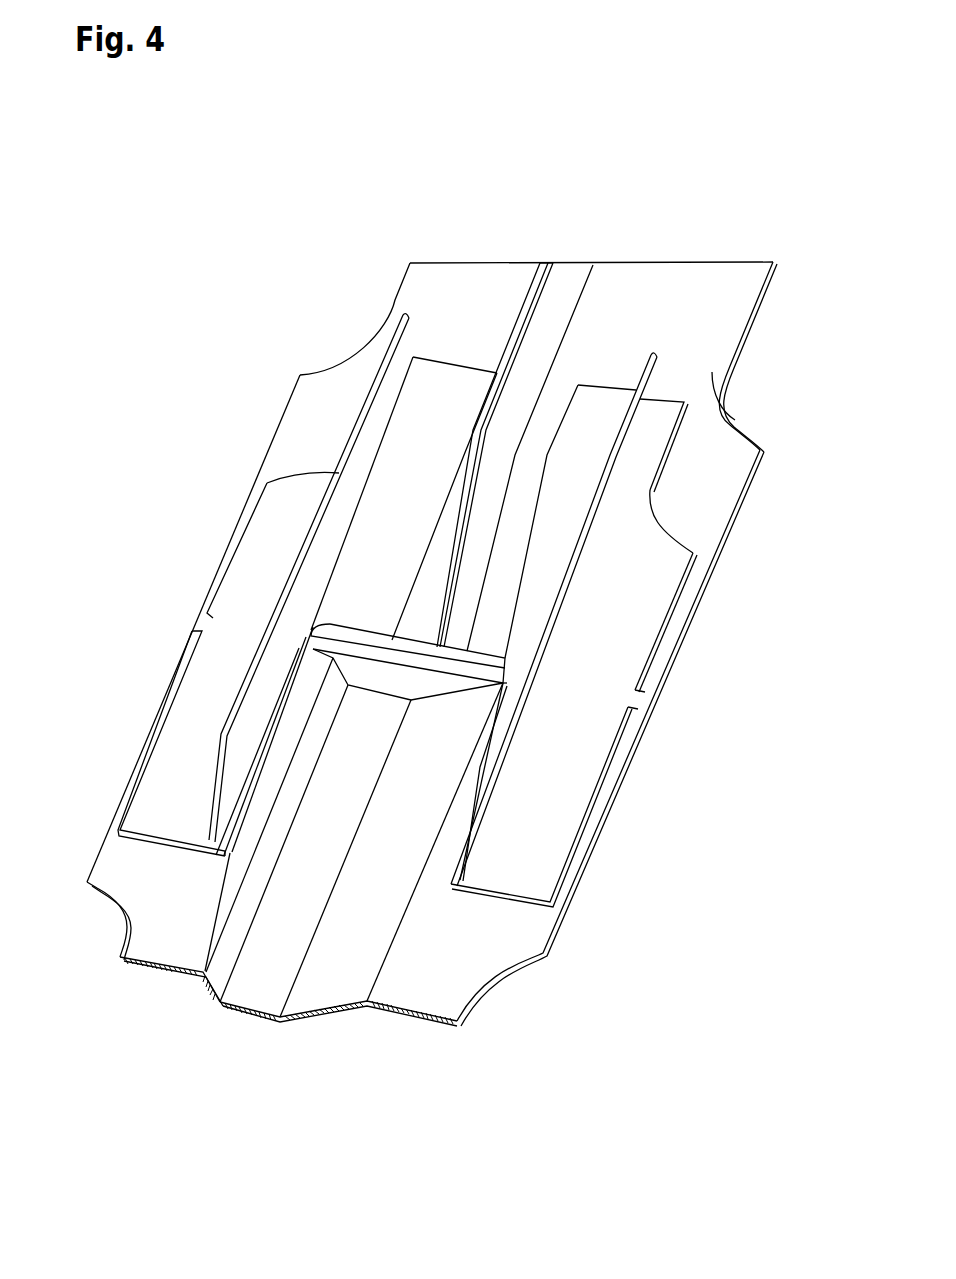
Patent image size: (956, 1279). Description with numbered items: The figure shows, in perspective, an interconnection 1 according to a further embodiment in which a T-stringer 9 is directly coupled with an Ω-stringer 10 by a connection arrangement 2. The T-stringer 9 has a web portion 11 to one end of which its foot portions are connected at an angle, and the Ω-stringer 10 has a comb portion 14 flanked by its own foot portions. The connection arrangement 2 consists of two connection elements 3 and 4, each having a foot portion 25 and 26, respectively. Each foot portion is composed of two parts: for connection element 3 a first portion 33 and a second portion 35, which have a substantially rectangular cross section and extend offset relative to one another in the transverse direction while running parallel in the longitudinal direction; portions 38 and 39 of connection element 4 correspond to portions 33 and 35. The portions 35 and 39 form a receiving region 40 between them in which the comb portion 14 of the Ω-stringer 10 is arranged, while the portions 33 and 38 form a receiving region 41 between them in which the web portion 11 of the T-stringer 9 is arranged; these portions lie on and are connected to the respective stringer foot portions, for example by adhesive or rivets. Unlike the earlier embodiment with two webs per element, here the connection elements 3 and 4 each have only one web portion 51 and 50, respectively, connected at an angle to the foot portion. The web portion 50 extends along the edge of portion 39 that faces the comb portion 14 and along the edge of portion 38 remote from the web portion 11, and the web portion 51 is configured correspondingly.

The interconnection 1 is at (160, 262).
The connection arrangement 2 is at (360, 343).
The connection element 3 is at (186, 828).
The connection element 4 is at (513, 870).
The T-stringer 9 is at (597, 312).
The Ω-stringer 10 is at (290, 994).
The web portion 11 is at (530, 302).
The comb portion 14 is at (240, 1000).
The foot portion 25 is at (248, 605).
The foot portion 26 is at (570, 750).
The first portion 33 is at (440, 400).
The second portion 35 is at (172, 825).
The portion 38 is at (600, 418).
The portion 39 is at (600, 690).
The receiving region 40 is at (343, 815).
The receiving region 41 is at (500, 490).
The web portion 50 is at (655, 381).
The web portion 51 is at (406, 342).